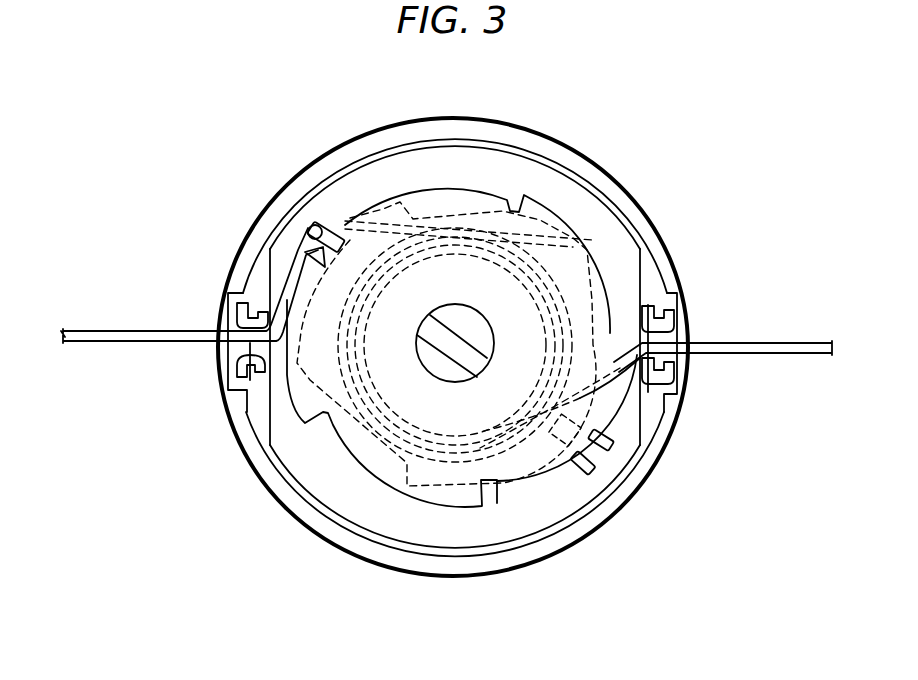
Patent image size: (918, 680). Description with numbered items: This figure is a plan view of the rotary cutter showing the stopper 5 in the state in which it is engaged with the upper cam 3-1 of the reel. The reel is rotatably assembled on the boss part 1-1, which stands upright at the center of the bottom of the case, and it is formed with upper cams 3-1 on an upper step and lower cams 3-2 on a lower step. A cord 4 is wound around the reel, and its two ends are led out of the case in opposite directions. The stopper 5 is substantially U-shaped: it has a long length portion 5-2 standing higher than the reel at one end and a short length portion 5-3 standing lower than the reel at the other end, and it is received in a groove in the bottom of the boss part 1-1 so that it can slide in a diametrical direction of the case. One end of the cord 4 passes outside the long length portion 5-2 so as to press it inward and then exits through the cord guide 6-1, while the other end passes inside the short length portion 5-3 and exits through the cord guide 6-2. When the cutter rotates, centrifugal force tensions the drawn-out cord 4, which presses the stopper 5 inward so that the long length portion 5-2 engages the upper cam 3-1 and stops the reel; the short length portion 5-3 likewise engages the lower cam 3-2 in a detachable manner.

The boss part 1-1 is at (473, 324).
The upper cam 3-1 is at (533, 205).
The lower cam 3-2 is at (590, 240).
The cord 4 is at (123, 344).
The stopper 5 is at (345, 240).
The long length portion 5-2 is at (313, 229).
The short length portion 5-3 is at (560, 440).
The cord guide 6-1 is at (238, 318).
The cord guide 6-2 is at (672, 320).